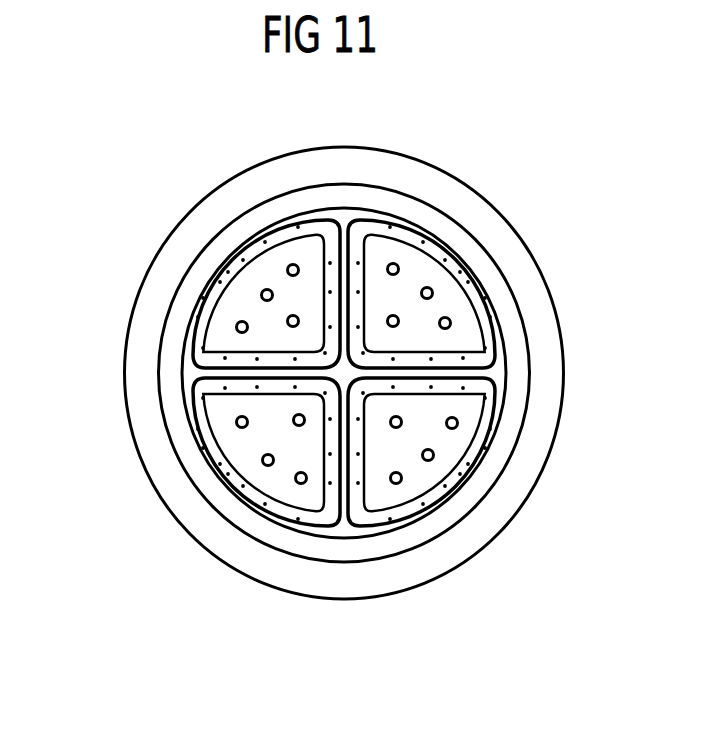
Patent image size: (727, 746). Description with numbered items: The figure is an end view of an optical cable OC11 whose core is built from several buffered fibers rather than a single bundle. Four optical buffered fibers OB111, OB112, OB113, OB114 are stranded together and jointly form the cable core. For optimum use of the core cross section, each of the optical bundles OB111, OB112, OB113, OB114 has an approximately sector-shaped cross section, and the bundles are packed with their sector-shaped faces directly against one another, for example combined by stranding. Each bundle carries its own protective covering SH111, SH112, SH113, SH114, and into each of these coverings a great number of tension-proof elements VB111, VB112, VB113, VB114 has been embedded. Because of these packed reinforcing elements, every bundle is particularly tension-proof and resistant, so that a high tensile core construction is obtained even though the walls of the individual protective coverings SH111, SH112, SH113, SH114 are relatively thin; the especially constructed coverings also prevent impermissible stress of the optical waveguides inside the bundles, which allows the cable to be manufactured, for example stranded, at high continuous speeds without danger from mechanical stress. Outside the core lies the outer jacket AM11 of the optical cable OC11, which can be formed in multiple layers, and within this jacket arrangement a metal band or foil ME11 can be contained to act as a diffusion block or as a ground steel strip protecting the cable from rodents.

The optical cable OC11 is at (150, 501).
The outer jacket AM11 is at (199, 527).
The metal band or foil ME11 is at (338, 562).
The protective covering SH111 is at (230, 269).
The tension-proof elements VB111 is at (215, 283).
The optical buffered fiber OB111 is at (277, 212).
The protective covering SH112 is at (465, 277).
The tension-proof elements VB112 is at (389, 213).
The optical buffered fiber OB112 is at (445, 227).
The protective covering SH113 is at (422, 508).
The tension-proof elements VB113 is at (504, 402).
The optical buffered fiber OB113 is at (468, 501).
The protective covering SH114 is at (196, 421).
The tension-proof elements VB114 is at (186, 402).
The optical buffered fiber OB114 is at (267, 534).